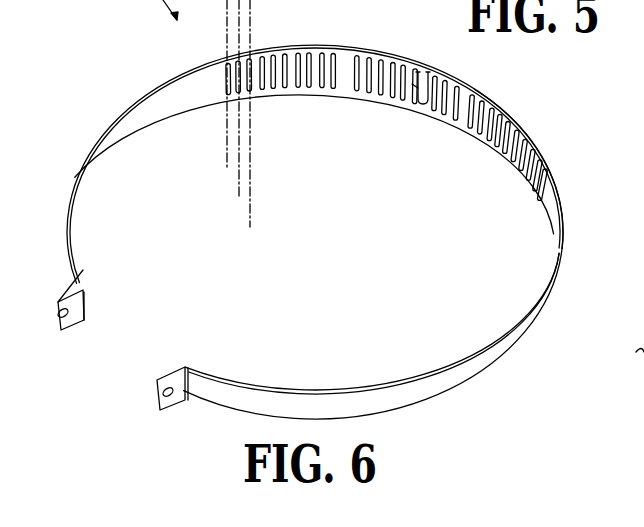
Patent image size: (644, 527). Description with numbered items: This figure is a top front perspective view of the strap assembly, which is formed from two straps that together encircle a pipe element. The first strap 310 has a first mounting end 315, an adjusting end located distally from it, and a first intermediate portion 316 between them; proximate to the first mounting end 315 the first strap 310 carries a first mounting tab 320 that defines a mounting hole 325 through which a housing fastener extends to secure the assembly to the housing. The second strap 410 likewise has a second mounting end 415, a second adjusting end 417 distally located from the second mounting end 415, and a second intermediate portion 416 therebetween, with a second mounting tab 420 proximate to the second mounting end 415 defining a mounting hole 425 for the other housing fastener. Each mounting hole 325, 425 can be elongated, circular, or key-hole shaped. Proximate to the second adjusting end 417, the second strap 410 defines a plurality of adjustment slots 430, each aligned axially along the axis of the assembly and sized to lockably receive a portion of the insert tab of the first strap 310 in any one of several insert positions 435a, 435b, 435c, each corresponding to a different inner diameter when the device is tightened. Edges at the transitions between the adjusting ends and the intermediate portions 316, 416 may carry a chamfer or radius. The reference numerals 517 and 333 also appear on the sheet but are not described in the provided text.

In FIG. 6, the first strap 310 is at (380, 398).
In FIG. 6, the first mounting end 315 is at (172, 362).
In FIG. 6, the first intermediate portion 316 is at (473, 365).
In FIG. 6, the first mounting tab 320 is at (173, 410).
In FIG. 6, the mounting hole 325 is at (157, 388).
In FIG. 6, the second strap 410 is at (150, 123).
In FIG. 6, the second mounting end 415 is at (80, 318).
In FIG. 6, the second intermediate portion 416 is at (128, 125).
In FIG. 6, the second adjusting end 417 is at (515, 114).
In FIG. 6, the second mounting tab 420 is at (68, 330).
In FIG. 6, the mounting hole 425 is at (73, 290).
In FIG. 6, the adjustment slot 430 is at (335, 67).
In FIG. 6, the insert position 435a is at (227, 152).
In FIG. 6, the insert position 435b is at (239, 183).
In FIG. 6, the insert position 435c is at (250, 213).
In FIG. 5, the clip 517 is at (412, 88).
In FIG. 5, the element 333 is at (617, 356).